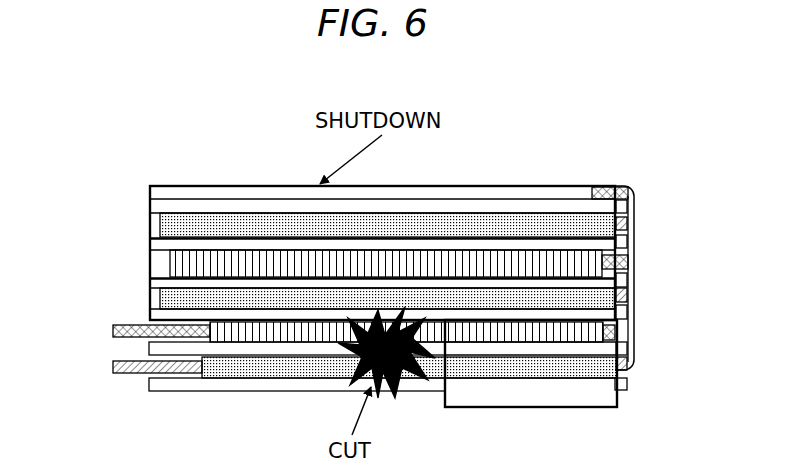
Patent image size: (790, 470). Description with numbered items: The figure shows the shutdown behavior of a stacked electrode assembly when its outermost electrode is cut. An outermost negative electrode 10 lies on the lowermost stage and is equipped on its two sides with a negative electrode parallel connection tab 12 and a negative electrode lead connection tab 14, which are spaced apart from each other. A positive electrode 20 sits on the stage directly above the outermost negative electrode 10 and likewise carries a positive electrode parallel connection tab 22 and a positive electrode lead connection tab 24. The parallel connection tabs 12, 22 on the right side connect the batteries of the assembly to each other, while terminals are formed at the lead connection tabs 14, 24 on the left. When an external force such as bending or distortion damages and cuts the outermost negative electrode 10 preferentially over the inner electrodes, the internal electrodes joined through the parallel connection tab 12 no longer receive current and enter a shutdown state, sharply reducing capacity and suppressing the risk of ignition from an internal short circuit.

The negative electrode 10 is at (227, 370).
The negative electrode parallel connection tab 12 is at (628, 362).
The negative electrode lead connection tab 14 is at (113, 365).
The positive electrode 20 is at (227, 330).
The positive electrode parallel connection tab 22 is at (620, 330).
The positive electrode lead connection tab 24 is at (113, 330).